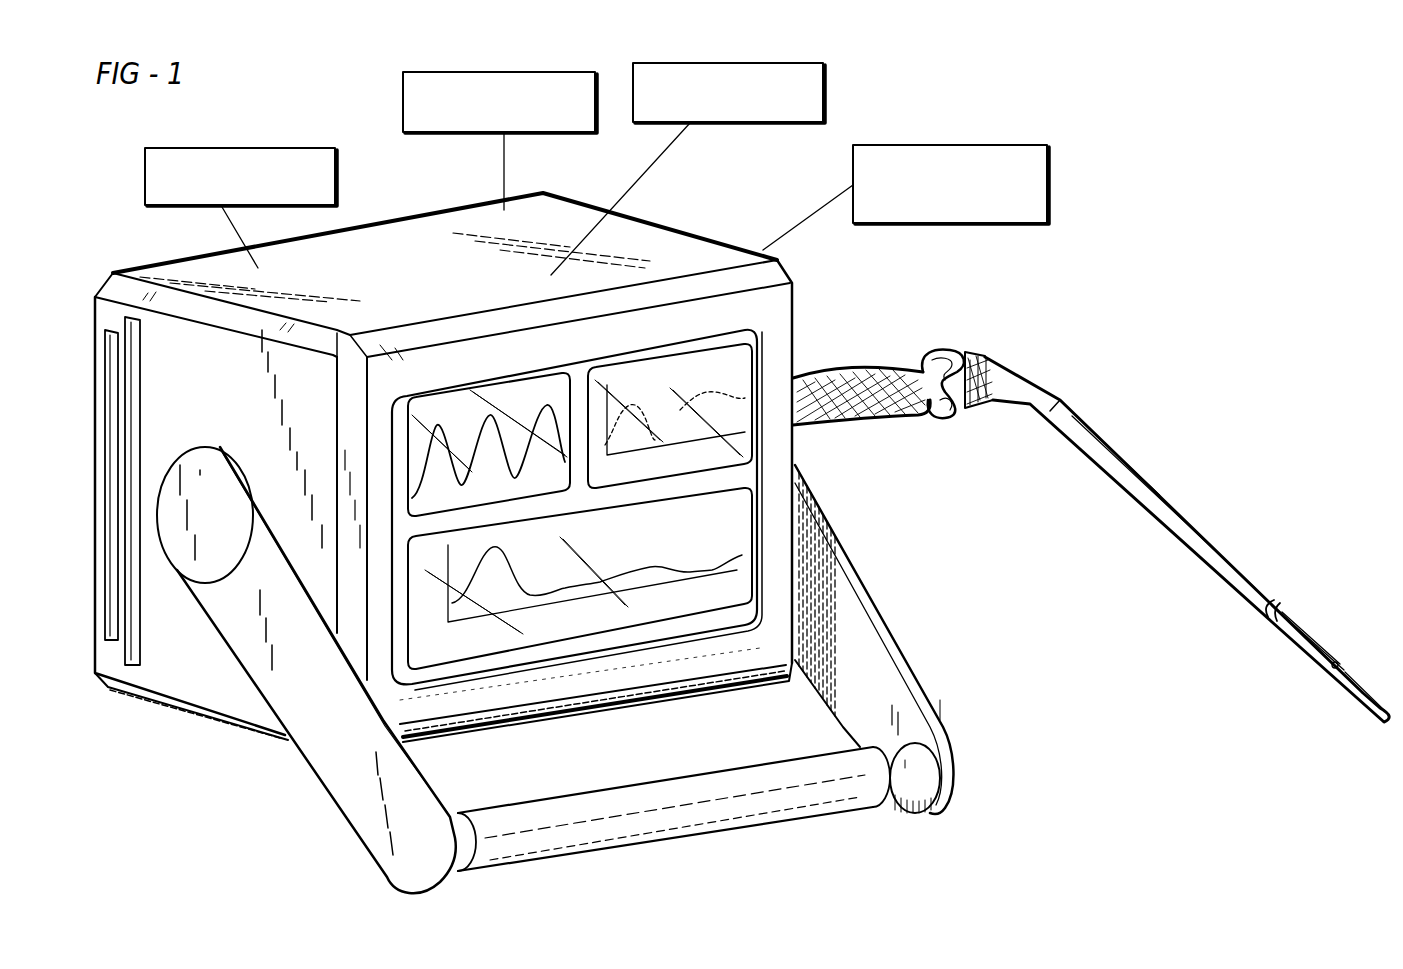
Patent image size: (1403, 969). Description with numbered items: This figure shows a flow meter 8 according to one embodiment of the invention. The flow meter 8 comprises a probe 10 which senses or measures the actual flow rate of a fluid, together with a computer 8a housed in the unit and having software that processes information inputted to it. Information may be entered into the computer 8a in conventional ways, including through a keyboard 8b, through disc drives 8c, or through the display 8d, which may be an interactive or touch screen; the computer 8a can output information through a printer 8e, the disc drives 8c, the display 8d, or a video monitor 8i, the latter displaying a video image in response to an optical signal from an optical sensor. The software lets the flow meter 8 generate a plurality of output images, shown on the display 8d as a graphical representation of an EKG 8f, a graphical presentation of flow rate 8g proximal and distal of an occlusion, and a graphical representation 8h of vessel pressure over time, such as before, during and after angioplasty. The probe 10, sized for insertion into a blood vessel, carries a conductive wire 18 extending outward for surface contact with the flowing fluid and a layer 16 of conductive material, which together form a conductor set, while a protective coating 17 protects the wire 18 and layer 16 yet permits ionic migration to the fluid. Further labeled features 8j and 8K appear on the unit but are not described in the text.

The flow meter 8 is at (1060, 160).
The computer 8a is at (336, 178).
The keyboard 8b is at (633, 122).
The disc drives 8c is at (112, 650).
The display 8d is at (758, 535).
The printer 8e is at (403, 92).
The EKG image 8f is at (412, 524).
The flow rate image 8g is at (745, 452).
The pressure over time image 8h is at (610, 637).
The video monitor 8i is at (853, 160).
The housing front panel 8j is at (765, 643).
The carrying handle 8K is at (948, 708).
The probe 10 is at (1157, 474).
The layer of conductive material 16 is at (1300, 628).
The protective coating 17 is at (1283, 637).
The conductive wire 18 is at (1347, 684).